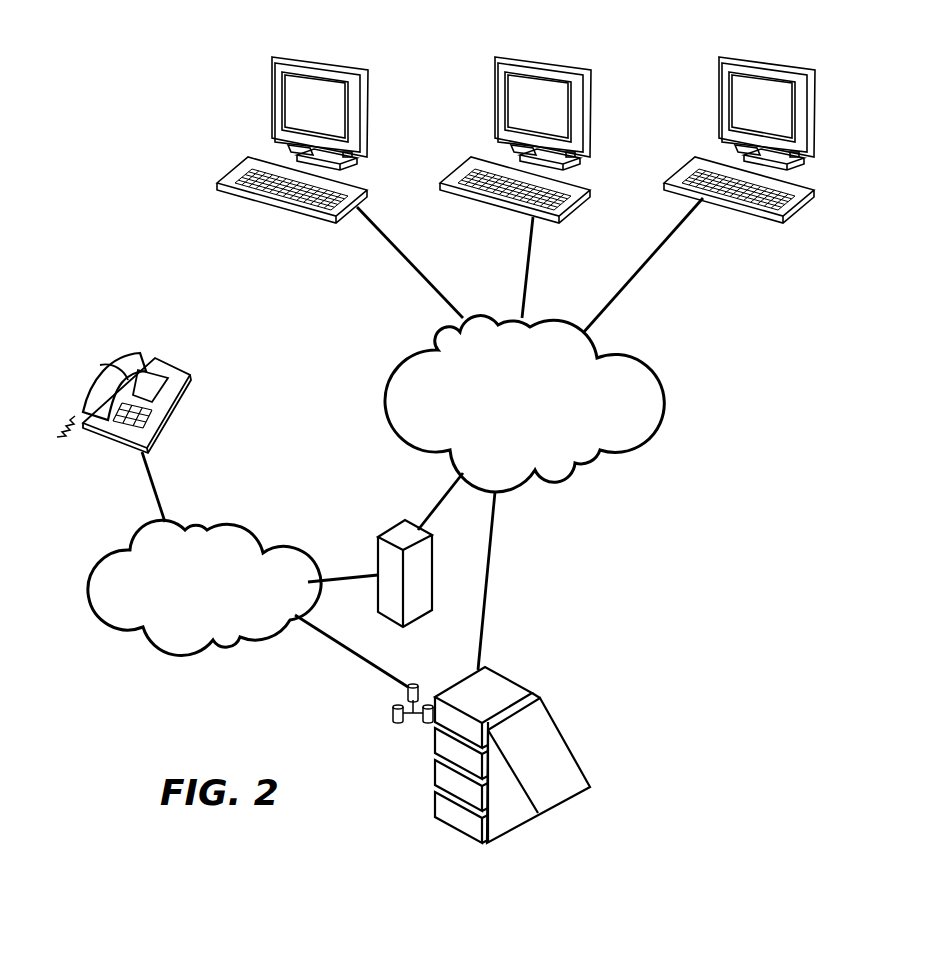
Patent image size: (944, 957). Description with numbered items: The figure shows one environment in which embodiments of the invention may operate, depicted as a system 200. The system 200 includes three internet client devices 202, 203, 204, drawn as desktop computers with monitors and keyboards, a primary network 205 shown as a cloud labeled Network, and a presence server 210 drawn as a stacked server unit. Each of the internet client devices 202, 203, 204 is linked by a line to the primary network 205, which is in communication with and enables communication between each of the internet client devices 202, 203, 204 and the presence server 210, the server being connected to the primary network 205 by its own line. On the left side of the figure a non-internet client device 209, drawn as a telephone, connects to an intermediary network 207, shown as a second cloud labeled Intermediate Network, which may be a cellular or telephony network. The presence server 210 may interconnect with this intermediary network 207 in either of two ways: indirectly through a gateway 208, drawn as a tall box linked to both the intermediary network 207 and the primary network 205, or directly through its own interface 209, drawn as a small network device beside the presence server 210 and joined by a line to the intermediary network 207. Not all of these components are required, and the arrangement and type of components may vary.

The system 200 is at (155, 104).
The internet client device 202 is at (323, 58).
The internet client device 203 is at (546, 58).
The internet client device 204 is at (770, 58).
The primary network 205 is at (640, 362).
The intermediary network 207 is at (272, 552).
The gateway 208 is at (397, 525).
The non-internet client device 209 is at (173, 363).
The presence server 210 is at (508, 675).